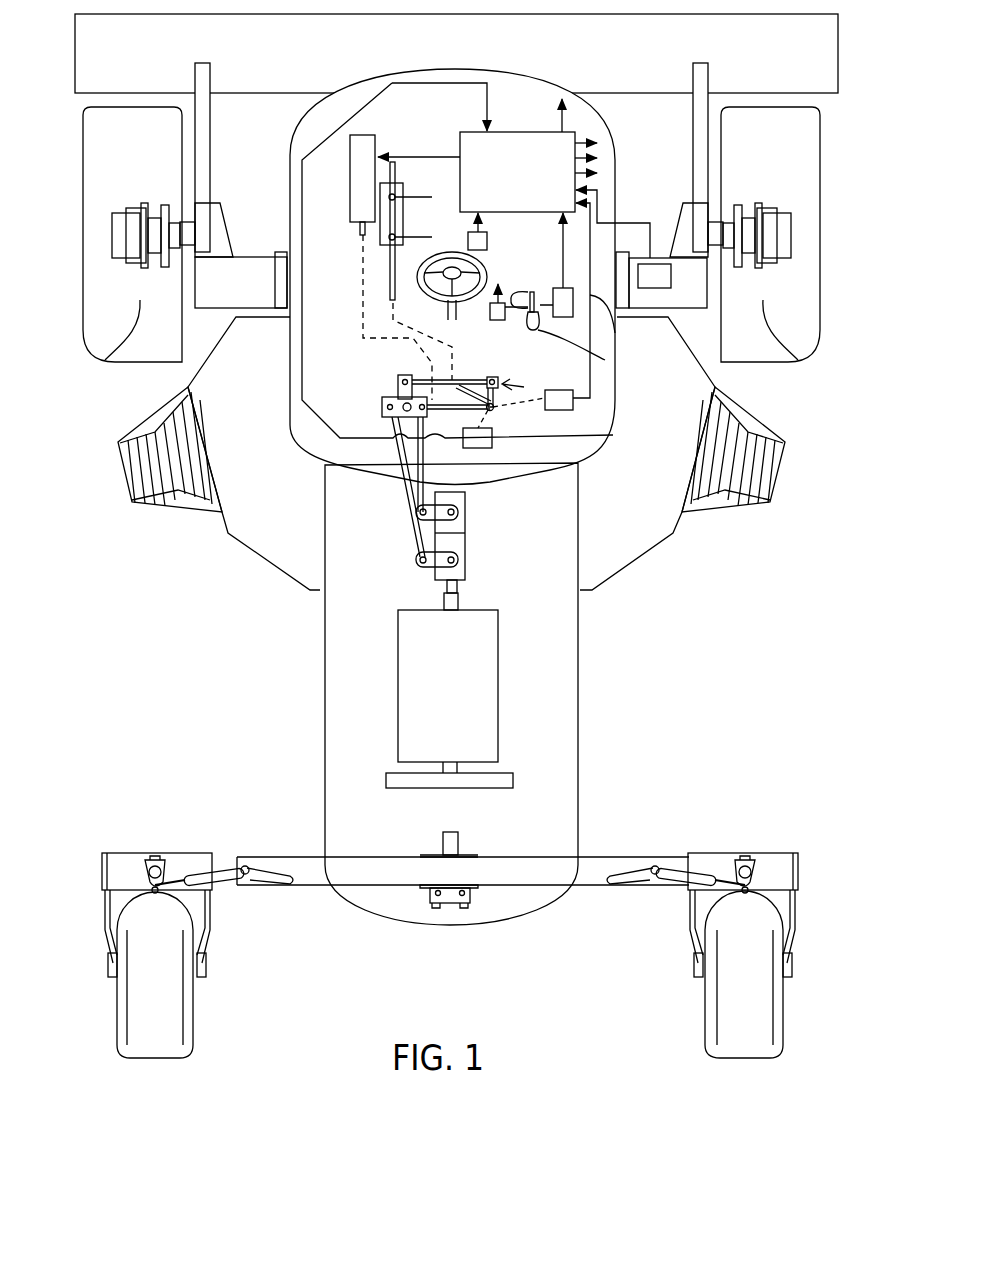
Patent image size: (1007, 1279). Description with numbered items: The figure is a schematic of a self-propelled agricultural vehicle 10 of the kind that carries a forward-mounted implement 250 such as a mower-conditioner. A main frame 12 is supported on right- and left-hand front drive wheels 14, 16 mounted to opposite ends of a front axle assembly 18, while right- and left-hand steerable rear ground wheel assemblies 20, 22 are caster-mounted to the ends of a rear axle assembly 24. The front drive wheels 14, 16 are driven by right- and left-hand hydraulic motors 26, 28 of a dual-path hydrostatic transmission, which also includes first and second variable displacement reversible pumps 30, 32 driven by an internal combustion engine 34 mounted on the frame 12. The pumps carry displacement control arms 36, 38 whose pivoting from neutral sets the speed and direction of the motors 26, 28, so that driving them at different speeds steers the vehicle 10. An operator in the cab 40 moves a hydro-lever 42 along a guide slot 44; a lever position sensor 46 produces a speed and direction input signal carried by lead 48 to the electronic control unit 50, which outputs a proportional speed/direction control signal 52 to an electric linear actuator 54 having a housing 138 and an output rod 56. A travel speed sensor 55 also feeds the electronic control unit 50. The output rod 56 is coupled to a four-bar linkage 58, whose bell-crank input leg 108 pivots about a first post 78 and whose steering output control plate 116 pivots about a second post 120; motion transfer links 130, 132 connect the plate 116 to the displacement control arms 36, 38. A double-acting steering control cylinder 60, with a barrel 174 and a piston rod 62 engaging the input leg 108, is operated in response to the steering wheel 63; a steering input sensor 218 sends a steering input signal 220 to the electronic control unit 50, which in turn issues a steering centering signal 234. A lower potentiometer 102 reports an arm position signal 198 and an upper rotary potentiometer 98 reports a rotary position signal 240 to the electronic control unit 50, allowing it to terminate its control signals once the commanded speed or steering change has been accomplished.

The self-propelled agricultural vehicle 10 is at (598, 687).
The main frame 12 is at (578, 615).
The right-hand front drive wheel 14 is at (790, 358).
The left-hand front drive wheel 16 is at (108, 358).
The front axle assembly 18 is at (246, 270).
The right-hand steerable rear ground wheel assembly 20 is at (785, 836).
The left-hand steerable rear ground wheel assembly 22 is at (157, 796).
The rear axle assembly 24 is at (513, 860).
The right-hand hydraulic motor 26 is at (780, 217).
The left-hand hydraulic motor 28 is at (125, 212).
The first variable displacement reversible pump 30 is at (470, 507).
The second variable displacement reversible pump 32 is at (470, 548).
The internal combustion engine 34 is at (480, 694).
The displacement control arm 36 is at (438, 505).
The displacement control arm 38 is at (418, 565).
The cab 40 is at (290, 383).
The hydro-lever 42 is at (531, 292).
The guide slot 44 is at (567, 318).
The lever position sensor 46 is at (605, 360).
The speed and direction input signal lead 48 is at (603, 240).
The electronic control unit 50 is at (460, 135).
The speed/direction control signal 52 is at (384, 233).
The electric linear actuator 54 is at (357, 140).
The travel speed sensor 55 is at (671, 275).
The output rod 56 is at (358, 228).
The four-bar linkage 58 is at (516, 383).
The double-acting steering control cylinder 60 is at (380, 250).
The piston rod 62 is at (388, 290).
The steering wheel 63 is at (488, 276).
The first upright post 78 is at (500, 410).
The upper rotary potentiometer 98 is at (492, 440).
The lower potentiometer 102 is at (598, 415).
The transverse input leg 108 is at (487, 378).
The steering output control plate 116 is at (397, 388).
The second upright post 120 is at (395, 390).
The motion transfer link 130 is at (425, 462).
The motion transfer link 132 is at (413, 515).
The actuator housing 138 is at (377, 252).
The cylindrical barrel 174 is at (382, 231).
The arm position signal 198 is at (615, 333).
The steering input sensor 218 is at (468, 242).
The steering input signal 220 is at (480, 222).
The steering centering signal 234 is at (560, 120).
The rotary position signal 240 is at (447, 83).
The forward-mounted implement 250 is at (654, 108).